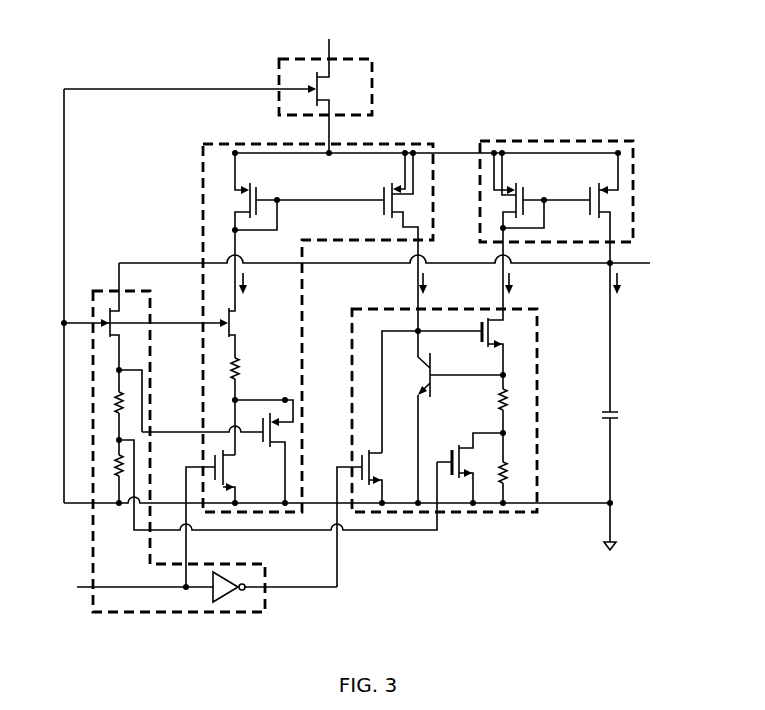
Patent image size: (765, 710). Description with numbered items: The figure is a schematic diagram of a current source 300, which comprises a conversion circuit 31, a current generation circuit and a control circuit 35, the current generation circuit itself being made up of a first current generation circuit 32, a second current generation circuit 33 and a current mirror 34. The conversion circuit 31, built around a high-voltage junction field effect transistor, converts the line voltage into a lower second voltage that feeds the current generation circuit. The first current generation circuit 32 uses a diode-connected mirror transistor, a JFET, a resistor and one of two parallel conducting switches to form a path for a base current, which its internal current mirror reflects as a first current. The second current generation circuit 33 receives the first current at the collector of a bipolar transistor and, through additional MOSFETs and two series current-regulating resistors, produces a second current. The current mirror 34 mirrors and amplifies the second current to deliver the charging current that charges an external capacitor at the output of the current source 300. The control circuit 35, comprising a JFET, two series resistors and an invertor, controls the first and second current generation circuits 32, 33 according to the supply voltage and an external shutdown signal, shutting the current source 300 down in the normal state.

The current source 300 is at (637, 76).
The conversion circuit 31 is at (362, 58).
The first current generation circuit 32 is at (402, 148).
The second current generation circuit 33 is at (505, 514).
The current mirror 34 is at (577, 136).
The control circuit 35 is at (266, 594).